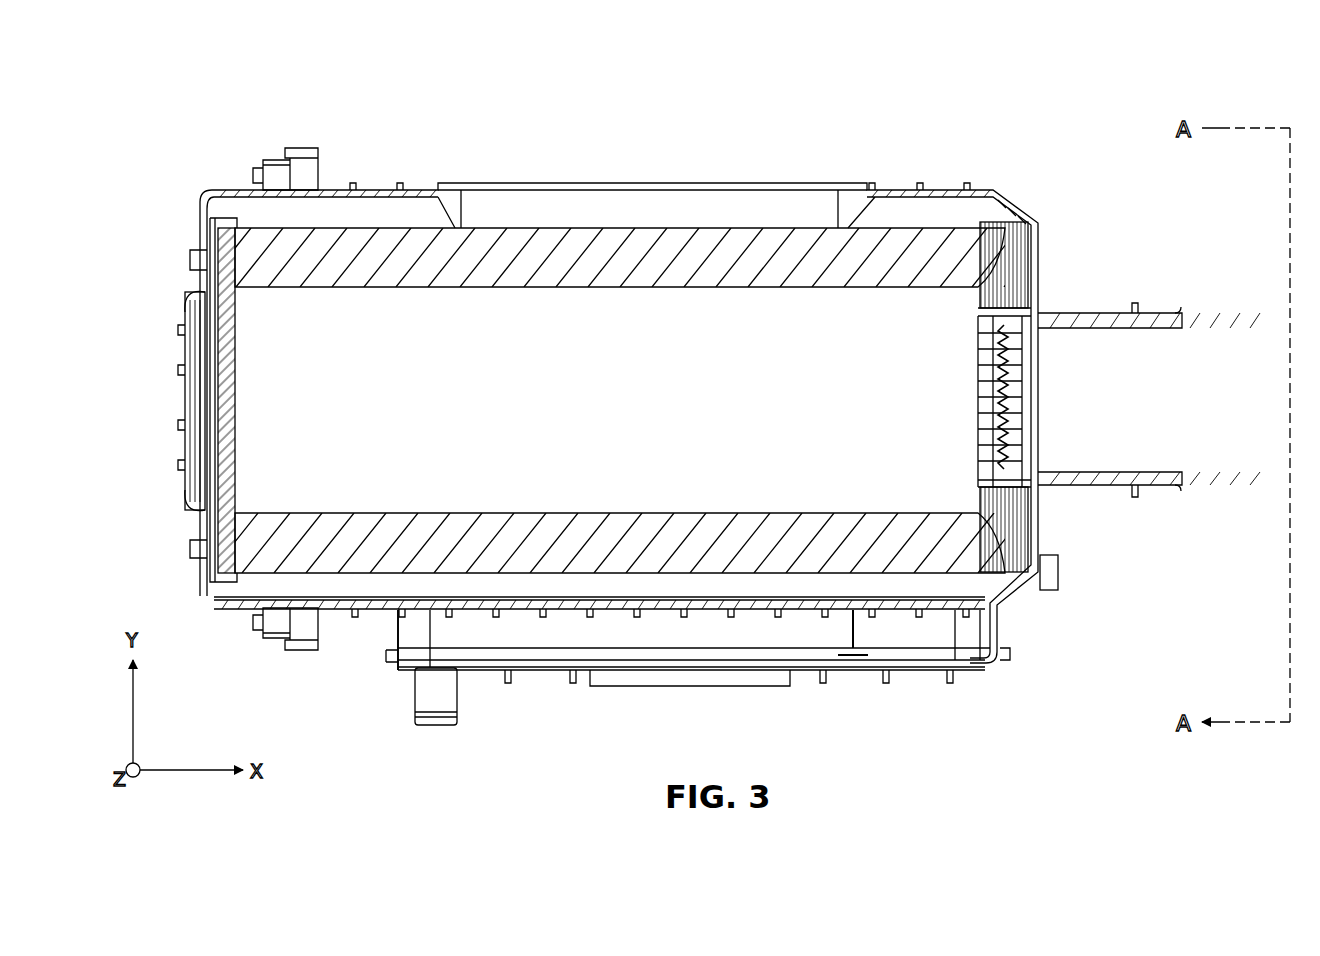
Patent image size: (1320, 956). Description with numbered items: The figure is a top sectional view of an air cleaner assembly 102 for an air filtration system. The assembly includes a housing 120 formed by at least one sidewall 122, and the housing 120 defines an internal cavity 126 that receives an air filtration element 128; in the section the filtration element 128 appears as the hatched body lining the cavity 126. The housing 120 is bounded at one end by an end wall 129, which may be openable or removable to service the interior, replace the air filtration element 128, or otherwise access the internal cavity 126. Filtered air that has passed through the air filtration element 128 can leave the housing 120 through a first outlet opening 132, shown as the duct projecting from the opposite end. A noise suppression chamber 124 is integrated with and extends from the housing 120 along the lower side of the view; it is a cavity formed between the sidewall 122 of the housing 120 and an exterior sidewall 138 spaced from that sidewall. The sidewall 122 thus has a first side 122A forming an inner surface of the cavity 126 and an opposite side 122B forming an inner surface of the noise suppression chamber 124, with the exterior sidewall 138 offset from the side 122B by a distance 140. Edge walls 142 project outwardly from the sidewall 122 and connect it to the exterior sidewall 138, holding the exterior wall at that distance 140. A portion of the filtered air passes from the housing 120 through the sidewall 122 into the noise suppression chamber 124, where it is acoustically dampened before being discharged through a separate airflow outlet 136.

The air cleaner assembly 102 is at (1092, 121).
The housing 120 is at (1012, 182).
The sidewall 122 is at (338, 612).
The first side 122A is at (710, 600).
The opposite side 122B is at (716, 612).
The noise suppression chamber 124 is at (1012, 637).
The internal cavity 126 is at (631, 417).
The air filtration element 128 is at (373, 268).
The end wall 129 is at (205, 292).
The first outlet opening 132 is at (1202, 378).
The airflow outlet 136 is at (458, 708).
The exterior sidewall 138 is at (858, 672).
The distance 140 is at (855, 632).
The edge wall 142 is at (386, 640).